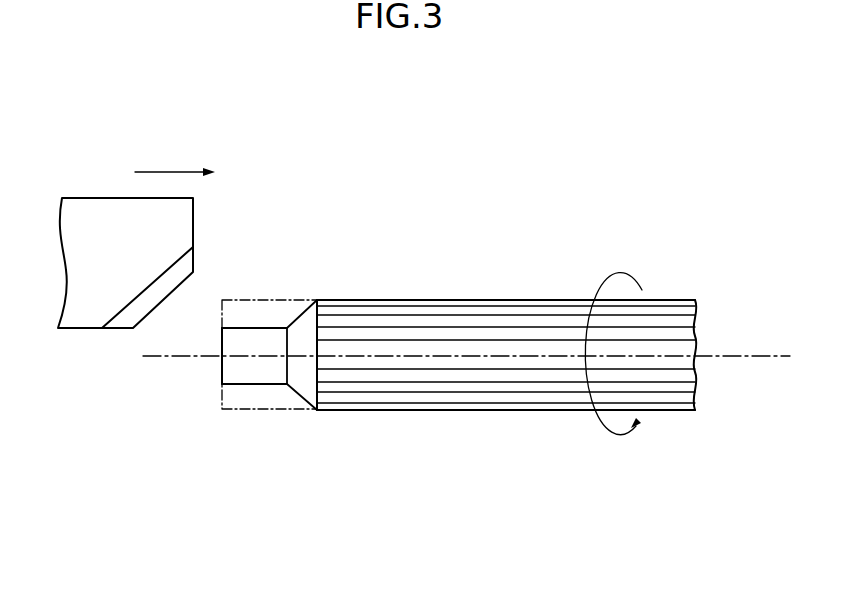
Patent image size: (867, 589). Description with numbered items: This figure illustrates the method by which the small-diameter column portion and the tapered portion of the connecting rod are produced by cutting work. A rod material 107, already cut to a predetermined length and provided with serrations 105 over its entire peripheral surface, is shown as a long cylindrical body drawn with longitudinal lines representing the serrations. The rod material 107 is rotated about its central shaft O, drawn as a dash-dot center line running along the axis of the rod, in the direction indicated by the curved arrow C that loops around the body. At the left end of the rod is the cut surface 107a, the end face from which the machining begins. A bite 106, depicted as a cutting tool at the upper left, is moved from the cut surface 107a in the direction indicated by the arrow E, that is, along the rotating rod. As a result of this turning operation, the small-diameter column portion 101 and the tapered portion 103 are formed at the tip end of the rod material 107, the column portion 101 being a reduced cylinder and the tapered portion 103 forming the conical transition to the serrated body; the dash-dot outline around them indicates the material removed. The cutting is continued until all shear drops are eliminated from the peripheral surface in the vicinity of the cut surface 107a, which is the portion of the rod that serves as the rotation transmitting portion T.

The small-diameter column portion 101 is at (248, 372).
The tapered portion 103 is at (310, 390).
The serrations 105 is at (478, 322).
The bite 106 is at (88, 308).
The rod material 107 is at (413, 387).
The cut surface 107a is at (220, 338).
The rotation transmitting portion T is at (393, 288).
The central shaft O is at (747, 350).
The rotation direction arrow C is at (613, 344).
The bite movement direction arrow E is at (175, 164).